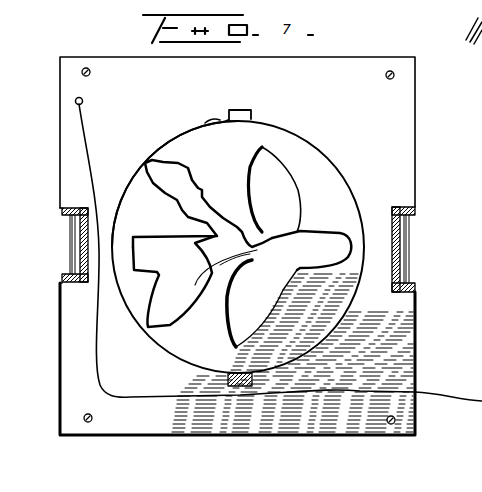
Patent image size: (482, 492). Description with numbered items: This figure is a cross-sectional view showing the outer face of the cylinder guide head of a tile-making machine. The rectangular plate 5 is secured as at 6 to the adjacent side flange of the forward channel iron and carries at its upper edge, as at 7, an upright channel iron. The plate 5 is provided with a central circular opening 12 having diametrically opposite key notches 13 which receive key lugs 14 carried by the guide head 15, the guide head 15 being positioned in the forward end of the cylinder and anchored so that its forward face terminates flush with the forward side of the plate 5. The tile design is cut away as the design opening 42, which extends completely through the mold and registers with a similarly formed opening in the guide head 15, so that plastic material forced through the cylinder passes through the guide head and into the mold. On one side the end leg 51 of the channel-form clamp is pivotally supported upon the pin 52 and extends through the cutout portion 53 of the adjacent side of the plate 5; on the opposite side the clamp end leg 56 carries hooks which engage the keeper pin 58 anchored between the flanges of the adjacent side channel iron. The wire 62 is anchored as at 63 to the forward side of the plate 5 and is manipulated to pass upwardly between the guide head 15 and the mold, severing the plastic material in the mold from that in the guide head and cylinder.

The plate 5 is at (118, 455).
The securing means 6 is at (90, 423).
The securing means 7 is at (87, 67).
The central circular opening 12 is at (330, 157).
The key notches 13 is at (243, 110).
The key lugs 14 is at (211, 117).
The guide head 15 is at (323, 192).
The design opening 42 is at (242, 282).
The end leg 51 is at (63, 210).
The pin 52 is at (75, 247).
The cutout portion 53 is at (77, 206).
The end leg 56 is at (410, 265).
The keeper pin 58 is at (410, 242).
The wire 62 is at (103, 393).
The anchor 63 is at (76, 98).